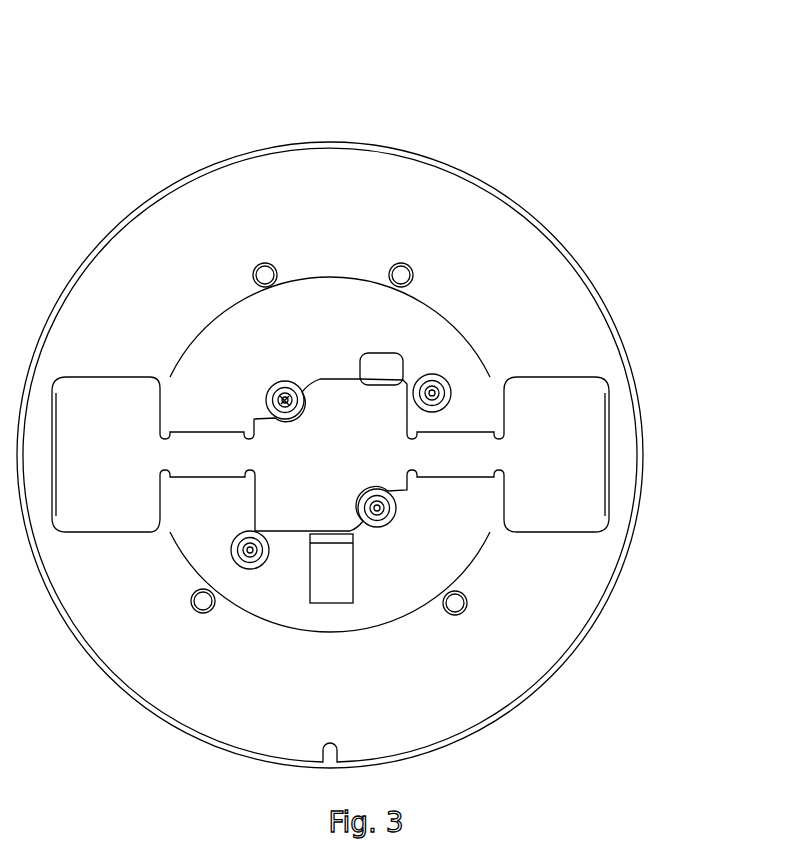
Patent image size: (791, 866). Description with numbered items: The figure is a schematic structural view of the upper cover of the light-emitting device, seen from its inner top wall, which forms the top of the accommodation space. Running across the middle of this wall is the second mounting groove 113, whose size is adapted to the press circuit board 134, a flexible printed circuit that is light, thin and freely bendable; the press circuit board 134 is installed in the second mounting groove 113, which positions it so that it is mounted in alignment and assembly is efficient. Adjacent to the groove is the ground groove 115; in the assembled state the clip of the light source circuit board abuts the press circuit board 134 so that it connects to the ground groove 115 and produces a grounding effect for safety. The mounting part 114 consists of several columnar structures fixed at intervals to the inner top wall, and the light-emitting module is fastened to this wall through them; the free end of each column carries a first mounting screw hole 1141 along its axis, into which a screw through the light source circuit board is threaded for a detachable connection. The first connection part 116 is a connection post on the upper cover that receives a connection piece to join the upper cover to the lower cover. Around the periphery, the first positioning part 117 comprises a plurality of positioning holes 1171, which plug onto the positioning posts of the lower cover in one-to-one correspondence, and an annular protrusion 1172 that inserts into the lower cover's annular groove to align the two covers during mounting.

The second mounting groove 113 is at (492, 378).
The mounting part 114 is at (282, 394).
The first mounting screw hole 1141 is at (280, 398).
The ground groove 115 is at (384, 365).
The first connection part 116 is at (240, 572).
The first positioning part 117 is at (313, 72).
The positioning holes 1171 is at (266, 262).
The annular protrusion 1172 is at (387, 145).
The press circuit board 134 is at (580, 463).